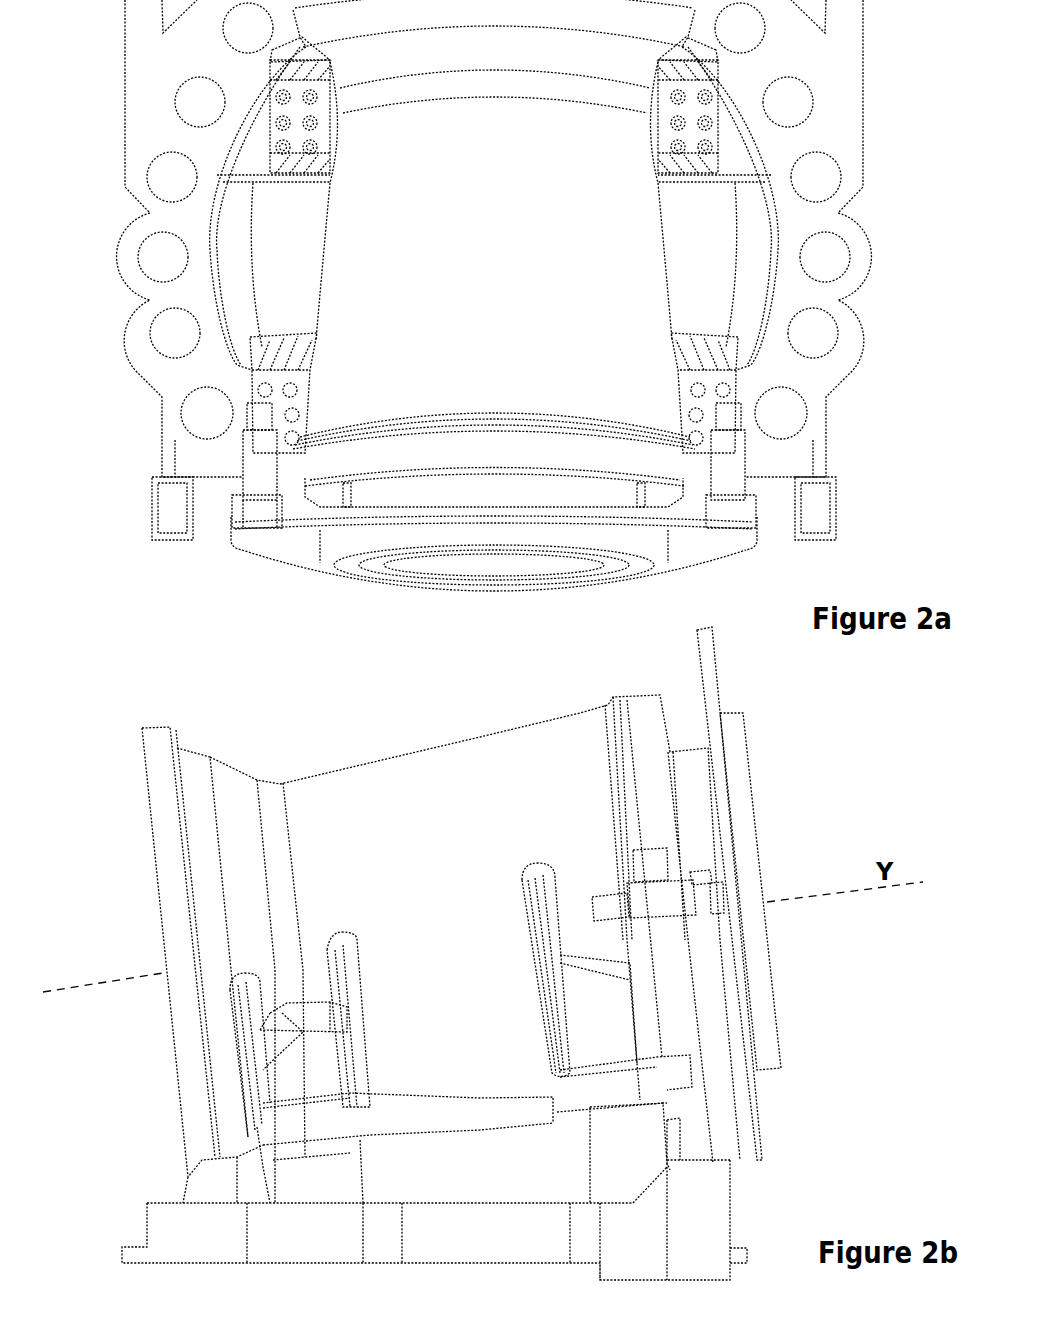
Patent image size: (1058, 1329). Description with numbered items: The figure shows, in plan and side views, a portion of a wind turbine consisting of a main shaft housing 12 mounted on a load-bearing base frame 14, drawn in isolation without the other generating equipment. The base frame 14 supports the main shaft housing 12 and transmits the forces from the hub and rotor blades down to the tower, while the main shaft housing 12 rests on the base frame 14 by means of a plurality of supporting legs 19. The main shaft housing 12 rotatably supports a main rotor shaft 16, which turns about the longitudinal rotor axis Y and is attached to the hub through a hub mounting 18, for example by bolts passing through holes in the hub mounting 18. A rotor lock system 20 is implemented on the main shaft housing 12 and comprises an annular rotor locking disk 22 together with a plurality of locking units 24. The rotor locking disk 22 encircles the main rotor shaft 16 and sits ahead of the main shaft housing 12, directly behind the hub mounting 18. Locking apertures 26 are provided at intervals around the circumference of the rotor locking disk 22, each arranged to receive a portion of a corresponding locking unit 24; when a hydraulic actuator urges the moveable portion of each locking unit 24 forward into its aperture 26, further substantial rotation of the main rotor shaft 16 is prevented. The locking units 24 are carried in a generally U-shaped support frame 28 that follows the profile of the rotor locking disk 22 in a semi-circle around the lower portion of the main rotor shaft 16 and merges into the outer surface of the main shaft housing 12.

In FIG. 2b, the main shaft housing 12 is at (317, 726).
In FIG. 2b, the base frame 14 is at (138, 1180).
In FIG. 2a, the main rotor shaft 16 is at (473, 497).
In FIG. 2a, the hub mounting 18 is at (600, 543).
In FIG. 2b, the supporting legs 19 is at (539, 941).
In FIG. 2a, the rotor lock system 20 is at (752, 566).
In FIG. 2a, the rotor locking disk 22 is at (235, 537).
In FIG. 2a, the locking units 24 is at (226, 487).
In FIG. 2a, the locking apertures 26 is at (293, 530).
In FIG. 2b, the support frame 28 is at (727, 1147).